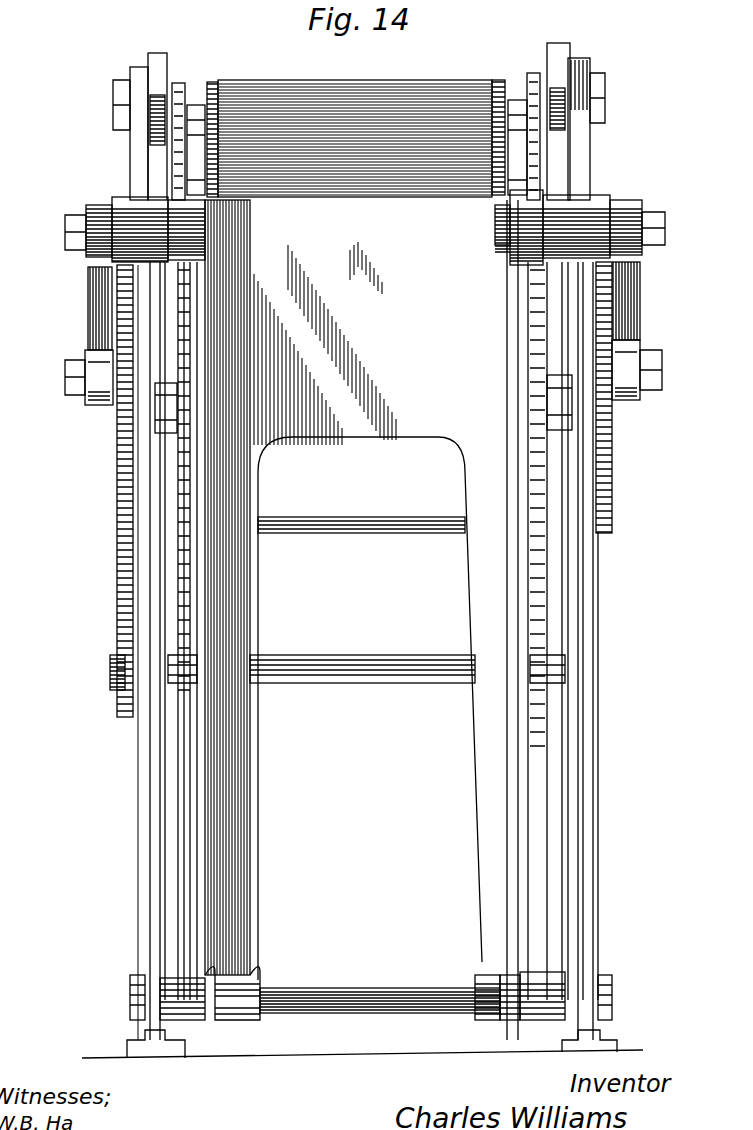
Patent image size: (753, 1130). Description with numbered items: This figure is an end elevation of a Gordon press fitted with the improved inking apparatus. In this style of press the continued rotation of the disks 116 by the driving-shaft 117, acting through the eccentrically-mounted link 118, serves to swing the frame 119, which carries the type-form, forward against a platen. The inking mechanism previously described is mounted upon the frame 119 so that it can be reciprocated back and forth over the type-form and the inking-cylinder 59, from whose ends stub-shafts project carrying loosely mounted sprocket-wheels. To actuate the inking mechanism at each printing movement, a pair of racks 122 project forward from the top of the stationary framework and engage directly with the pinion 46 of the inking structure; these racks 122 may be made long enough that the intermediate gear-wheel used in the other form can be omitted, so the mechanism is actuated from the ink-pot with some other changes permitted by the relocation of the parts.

The inking-cylinder 59 is at (355, 138).
The racks 122 is at (165, 72).
The gear-pinion 46 is at (150, 133).
The eccentrically-mounted link 118 is at (96, 320).
The disks 116 is at (125, 572).
The driving-shaft 117 is at (122, 695).
The frame 119 is at (248, 590).